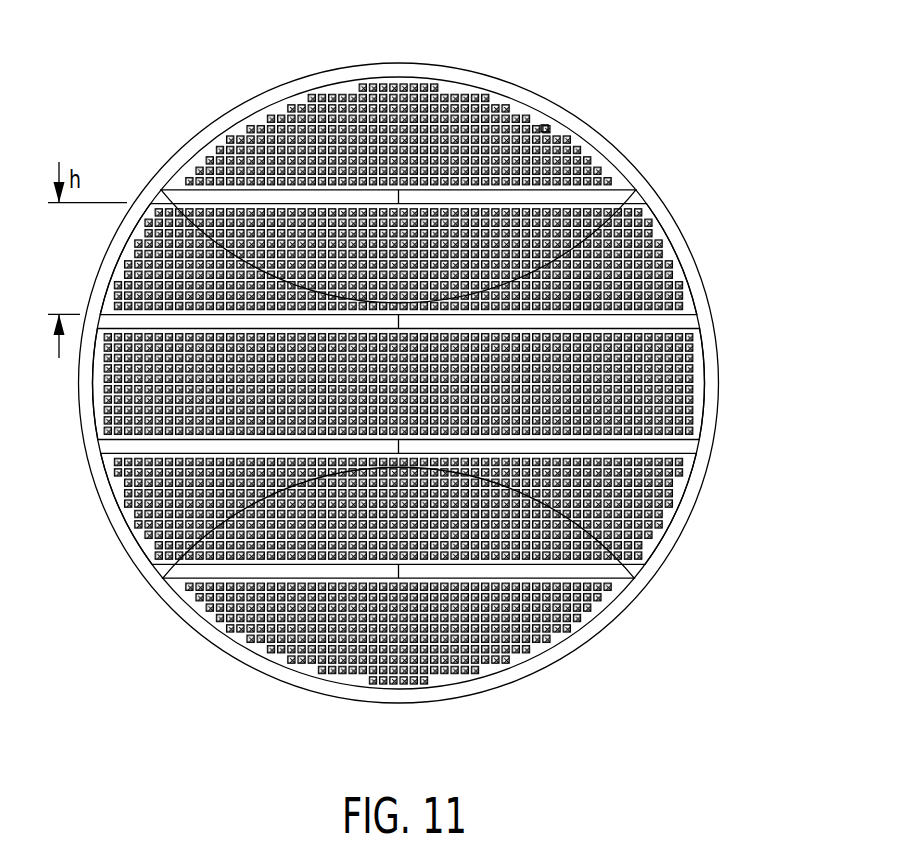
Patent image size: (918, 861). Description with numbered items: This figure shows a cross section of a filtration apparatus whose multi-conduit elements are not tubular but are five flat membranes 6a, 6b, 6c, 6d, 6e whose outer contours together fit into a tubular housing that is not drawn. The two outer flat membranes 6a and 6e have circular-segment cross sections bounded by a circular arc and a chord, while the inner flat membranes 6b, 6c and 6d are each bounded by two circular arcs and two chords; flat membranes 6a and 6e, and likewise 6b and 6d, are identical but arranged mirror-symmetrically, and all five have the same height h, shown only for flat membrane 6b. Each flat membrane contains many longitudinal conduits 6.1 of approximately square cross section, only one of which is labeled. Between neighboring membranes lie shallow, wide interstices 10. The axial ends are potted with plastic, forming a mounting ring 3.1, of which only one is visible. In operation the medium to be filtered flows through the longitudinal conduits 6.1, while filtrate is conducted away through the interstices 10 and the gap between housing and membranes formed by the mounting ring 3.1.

The mounting ring 3.1 is at (340, 80).
The flat membrane 6a is at (452, 90).
The flat membrane 6b is at (653, 240).
The flat membrane 6c is at (698, 390).
The flat membrane 6d is at (658, 533).
The flat membrane 6e is at (517, 663).
The longitudinal conduit 6.1 is at (548, 128).
The interstice 10 is at (273, 197).